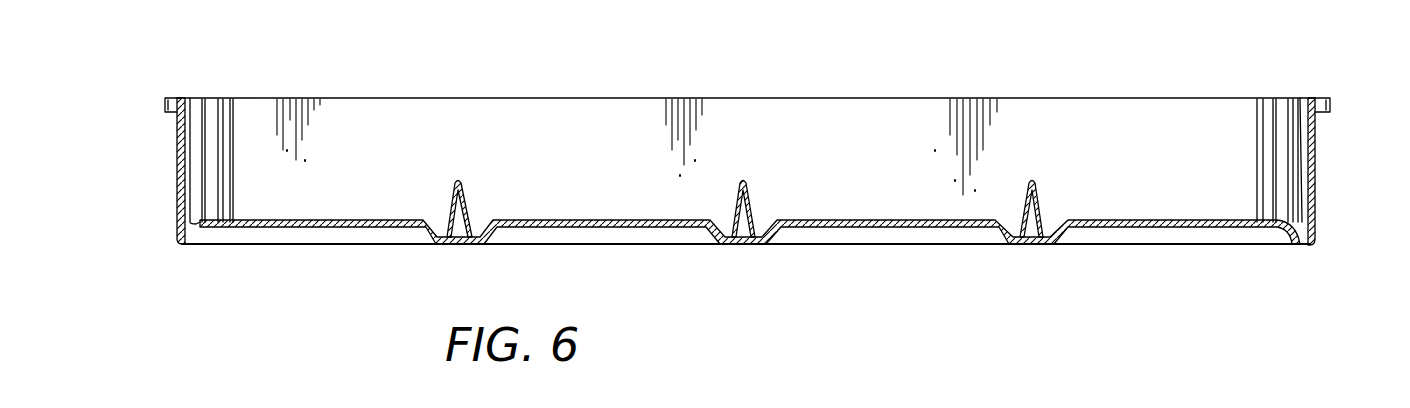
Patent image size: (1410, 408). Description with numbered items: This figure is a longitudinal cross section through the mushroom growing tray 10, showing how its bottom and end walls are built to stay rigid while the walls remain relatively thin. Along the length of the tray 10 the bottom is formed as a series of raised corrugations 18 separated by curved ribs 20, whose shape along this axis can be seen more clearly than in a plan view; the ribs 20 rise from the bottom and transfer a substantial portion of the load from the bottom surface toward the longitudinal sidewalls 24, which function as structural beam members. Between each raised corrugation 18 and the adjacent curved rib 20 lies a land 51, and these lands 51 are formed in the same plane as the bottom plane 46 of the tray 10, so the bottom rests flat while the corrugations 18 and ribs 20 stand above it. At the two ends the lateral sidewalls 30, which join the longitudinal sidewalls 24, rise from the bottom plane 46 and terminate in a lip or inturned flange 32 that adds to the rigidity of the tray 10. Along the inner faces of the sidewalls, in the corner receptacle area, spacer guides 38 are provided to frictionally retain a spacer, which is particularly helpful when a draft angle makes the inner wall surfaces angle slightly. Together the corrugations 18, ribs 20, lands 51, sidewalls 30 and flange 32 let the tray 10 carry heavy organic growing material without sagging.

The tray 10 is at (998, 80).
The raised corrugations 18 is at (340, 220).
The curved ribs 20 is at (462, 180).
The longitudinal sidewalls 24 is at (916, 130).
The lateral sidewalls 30 is at (177, 176).
The inturned flange 32 is at (166, 105).
The spacer guides 38 is at (201, 135).
The bottom plane 46 is at (626, 247).
The land 51 is at (474, 248).